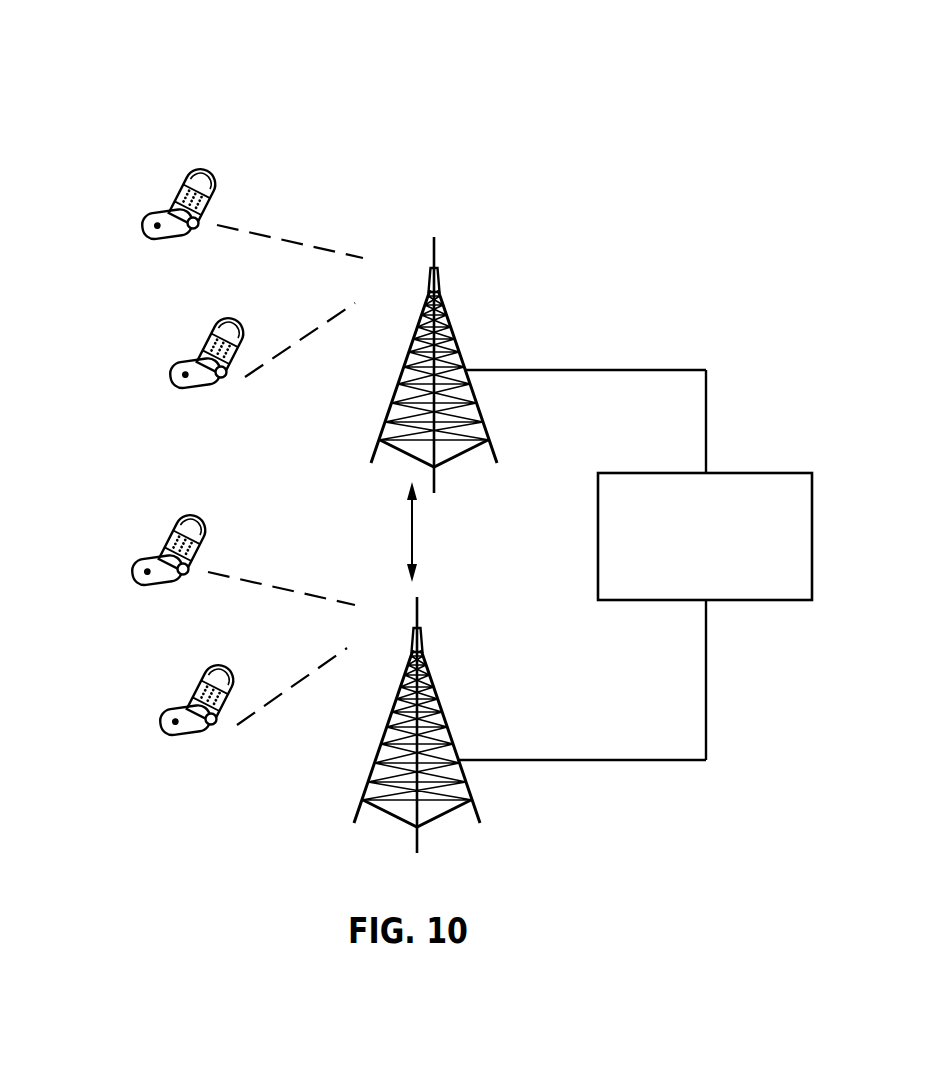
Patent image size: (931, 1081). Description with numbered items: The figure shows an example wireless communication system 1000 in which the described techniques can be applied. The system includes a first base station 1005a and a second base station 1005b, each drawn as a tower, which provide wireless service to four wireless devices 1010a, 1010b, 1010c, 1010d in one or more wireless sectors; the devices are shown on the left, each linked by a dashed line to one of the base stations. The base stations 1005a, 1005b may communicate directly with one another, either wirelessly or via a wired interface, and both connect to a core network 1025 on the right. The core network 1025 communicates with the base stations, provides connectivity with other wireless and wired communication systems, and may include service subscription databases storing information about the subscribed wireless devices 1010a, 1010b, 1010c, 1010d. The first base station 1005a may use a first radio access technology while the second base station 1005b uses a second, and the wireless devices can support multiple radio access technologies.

The wireless communication system 1000 is at (389, 34).
The first base station 1005a is at (446, 320).
The second base station 1005b is at (418, 623).
The wireless device 1010a is at (180, 182).
The wireless device 1010b is at (208, 331).
The wireless device 1010c is at (170, 528).
The wireless device 1010d is at (198, 678).
The core network 1025 is at (608, 473).